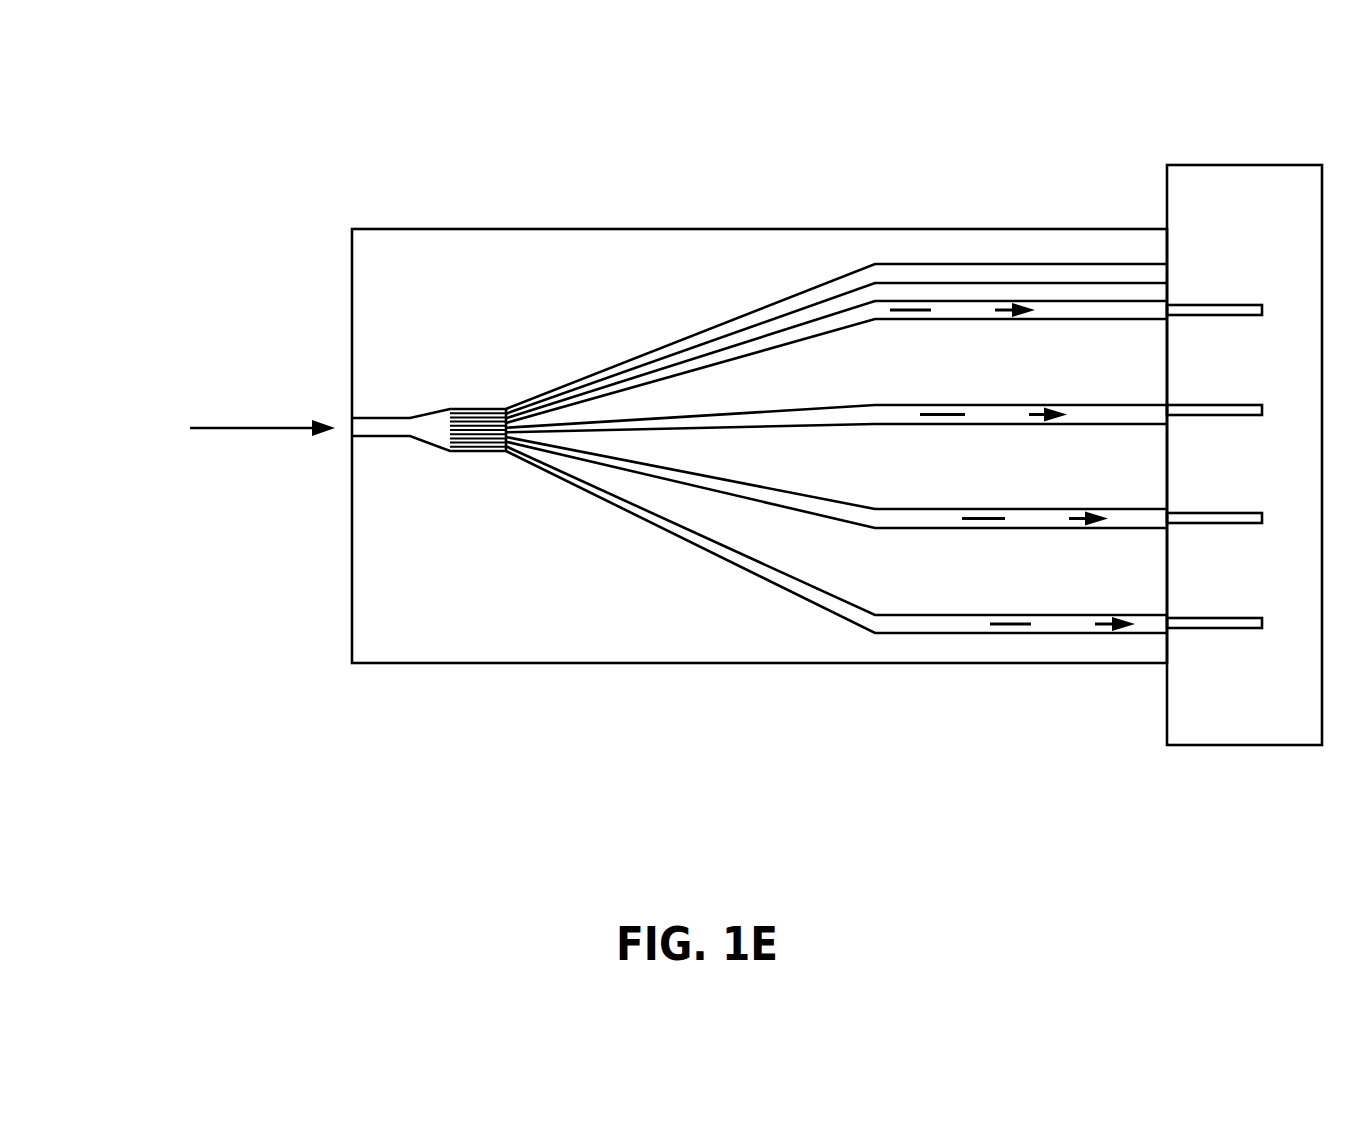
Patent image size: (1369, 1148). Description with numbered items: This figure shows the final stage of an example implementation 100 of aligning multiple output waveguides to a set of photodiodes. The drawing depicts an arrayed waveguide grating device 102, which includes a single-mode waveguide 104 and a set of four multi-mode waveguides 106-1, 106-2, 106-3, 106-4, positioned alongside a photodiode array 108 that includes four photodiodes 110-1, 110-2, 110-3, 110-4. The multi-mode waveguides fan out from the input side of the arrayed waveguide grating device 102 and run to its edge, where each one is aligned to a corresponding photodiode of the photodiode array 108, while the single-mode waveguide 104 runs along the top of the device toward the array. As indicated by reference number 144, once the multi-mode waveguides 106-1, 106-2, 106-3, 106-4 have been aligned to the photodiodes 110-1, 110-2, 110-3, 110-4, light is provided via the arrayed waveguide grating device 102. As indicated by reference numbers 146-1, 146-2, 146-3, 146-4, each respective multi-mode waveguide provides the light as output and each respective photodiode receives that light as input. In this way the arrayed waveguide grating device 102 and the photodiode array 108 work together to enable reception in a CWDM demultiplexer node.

The example implementation 100 is at (176, 62).
The arrayed waveguide grating device 102 is at (426, 267).
The single-mode waveguide 104 is at (953, 258).
The multi-mode waveguide 106-1 is at (963, 349).
The multi-mode waveguide 106-2 is at (963, 449).
The multi-mode waveguide 106-3 is at (963, 552).
The multi-mode waveguide 106-4 is at (963, 657).
The photodiode array 108 is at (1314, 204).
The photodiode 110-1 is at (1246, 301).
The photodiode 110-2 is at (1246, 402).
The photodiode 110-3 is at (1246, 508).
The photodiode 110-4 is at (1246, 613).
The light provided via arrayed waveguide grating device 144 is at (262, 417).
The light output to photodiode 146-1 is at (962, 310).
The light output to photodiode 146-2 is at (993, 415).
The light output to photodiode 146-3 is at (1035, 519).
The light output to photodiode 146-4 is at (1062, 624).